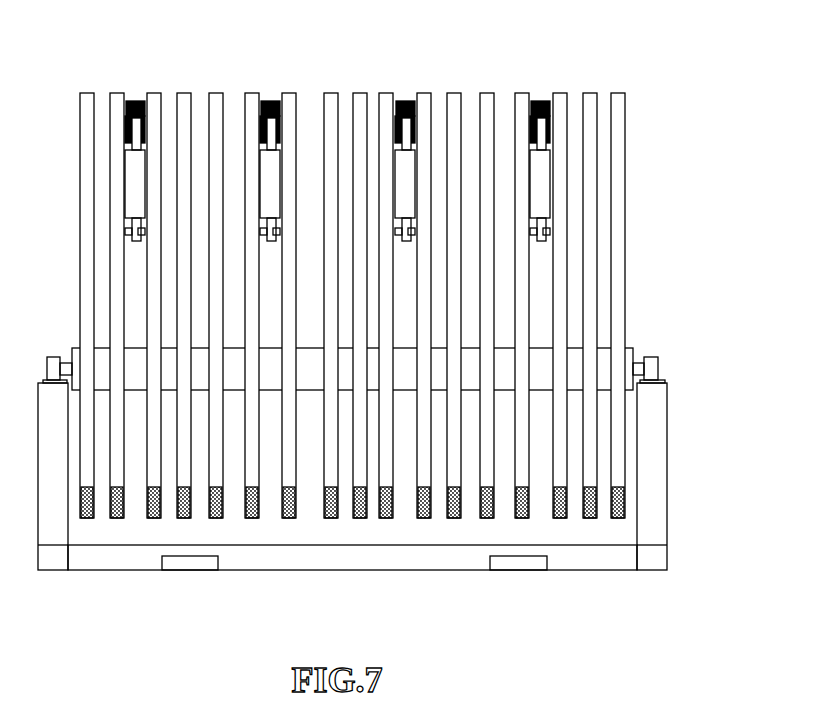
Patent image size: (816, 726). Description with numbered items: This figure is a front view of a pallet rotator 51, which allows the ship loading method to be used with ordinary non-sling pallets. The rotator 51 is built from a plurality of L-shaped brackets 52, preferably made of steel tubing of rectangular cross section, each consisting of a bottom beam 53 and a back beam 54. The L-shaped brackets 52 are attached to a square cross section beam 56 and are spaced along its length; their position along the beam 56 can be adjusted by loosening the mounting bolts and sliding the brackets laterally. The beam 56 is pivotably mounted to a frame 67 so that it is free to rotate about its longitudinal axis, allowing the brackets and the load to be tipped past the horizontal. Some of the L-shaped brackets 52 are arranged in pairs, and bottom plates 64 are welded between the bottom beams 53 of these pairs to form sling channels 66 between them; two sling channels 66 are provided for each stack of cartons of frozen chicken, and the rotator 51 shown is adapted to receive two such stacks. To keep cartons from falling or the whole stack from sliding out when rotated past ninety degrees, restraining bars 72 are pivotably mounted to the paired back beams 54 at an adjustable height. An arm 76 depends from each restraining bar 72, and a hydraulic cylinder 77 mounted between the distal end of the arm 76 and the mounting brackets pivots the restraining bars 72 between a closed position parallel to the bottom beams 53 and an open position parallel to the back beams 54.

The rotator 51 is at (399, 315).
The L-shaped brackets 52 is at (409, 269).
The bottom beams 53 is at (612, 497).
The back beams 54 is at (617, 260).
The square cross section beam 56 is at (138, 366).
The bottom plates 64 is at (137, 513).
The sling channels 66 is at (135, 500).
The frame 67 is at (655, 475).
The restraining bars 72 is at (135, 101).
The arm 76 is at (130, 120).
The hydraulic cylinder 77 is at (137, 190).